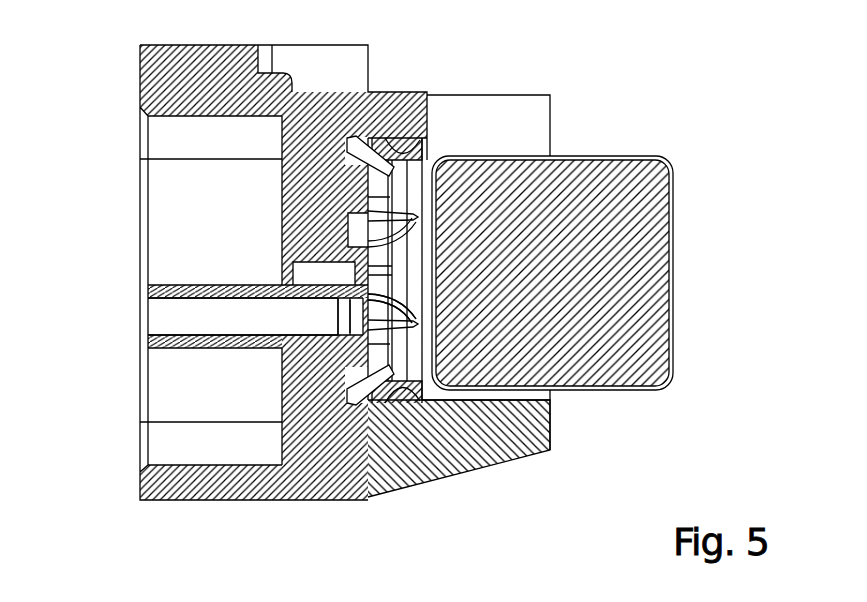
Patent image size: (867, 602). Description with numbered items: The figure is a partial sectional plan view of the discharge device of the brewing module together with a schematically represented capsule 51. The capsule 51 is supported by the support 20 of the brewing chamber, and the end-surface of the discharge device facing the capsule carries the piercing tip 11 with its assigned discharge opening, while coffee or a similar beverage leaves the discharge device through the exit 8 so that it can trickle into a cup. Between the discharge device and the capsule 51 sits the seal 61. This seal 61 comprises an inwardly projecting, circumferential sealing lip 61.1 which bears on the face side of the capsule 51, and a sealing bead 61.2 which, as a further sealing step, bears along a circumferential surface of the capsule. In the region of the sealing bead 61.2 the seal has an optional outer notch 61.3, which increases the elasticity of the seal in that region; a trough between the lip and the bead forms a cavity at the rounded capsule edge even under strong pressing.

The exit 8 is at (302, 328).
The piercing tip 11 is at (415, 216).
The support 20 is at (508, 400).
The capsule 51 is at (602, 227).
The seal 61 is at (410, 138).
The sealing lip 61.1 is at (385, 366).
The sealing bead 61.2 is at (395, 390).
The outer notch 61.3 is at (393, 396).